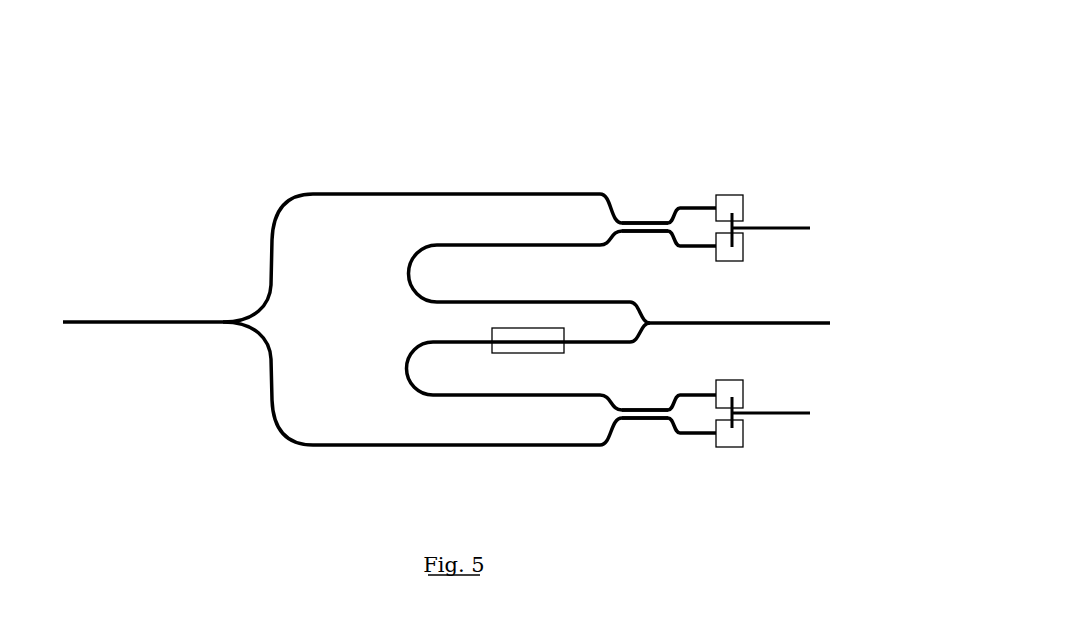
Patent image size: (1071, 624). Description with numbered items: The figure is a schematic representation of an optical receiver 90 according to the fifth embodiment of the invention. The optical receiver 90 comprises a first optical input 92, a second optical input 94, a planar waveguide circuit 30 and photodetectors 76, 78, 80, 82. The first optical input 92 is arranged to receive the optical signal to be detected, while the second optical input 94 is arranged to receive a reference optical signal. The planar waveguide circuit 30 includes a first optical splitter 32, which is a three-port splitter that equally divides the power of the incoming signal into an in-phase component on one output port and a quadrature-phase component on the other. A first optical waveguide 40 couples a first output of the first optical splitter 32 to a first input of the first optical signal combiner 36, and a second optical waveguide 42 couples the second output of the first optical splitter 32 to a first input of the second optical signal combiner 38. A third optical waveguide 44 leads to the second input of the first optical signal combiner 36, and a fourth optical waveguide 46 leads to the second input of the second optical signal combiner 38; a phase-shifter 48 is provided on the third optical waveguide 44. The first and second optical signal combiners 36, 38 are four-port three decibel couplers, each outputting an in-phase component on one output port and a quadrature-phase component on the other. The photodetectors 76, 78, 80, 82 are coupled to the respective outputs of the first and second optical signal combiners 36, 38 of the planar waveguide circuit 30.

The optical receiver 90 is at (642, 69).
The planar waveguide circuit 30 is at (259, 147).
The first optical splitter 32 is at (223, 333).
The first optical signal combiner 36 is at (637, 211).
The second optical signal combiner 38 is at (641, 429).
The first optical waveguide 40 is at (326, 193).
The second optical waveguide 42 is at (322, 449).
The third optical waveguide 44 is at (440, 246).
The fourth optical waveguide 46 is at (580, 393).
The phase-shifter 48 is at (494, 328).
The photodetector 76 is at (731, 200).
The photodetector 78 is at (736, 255).
The photodetector 80 is at (735, 390).
The photodetector 82 is at (737, 441).
The first optical input 92 is at (91, 326).
The second optical input 94 is at (818, 318).